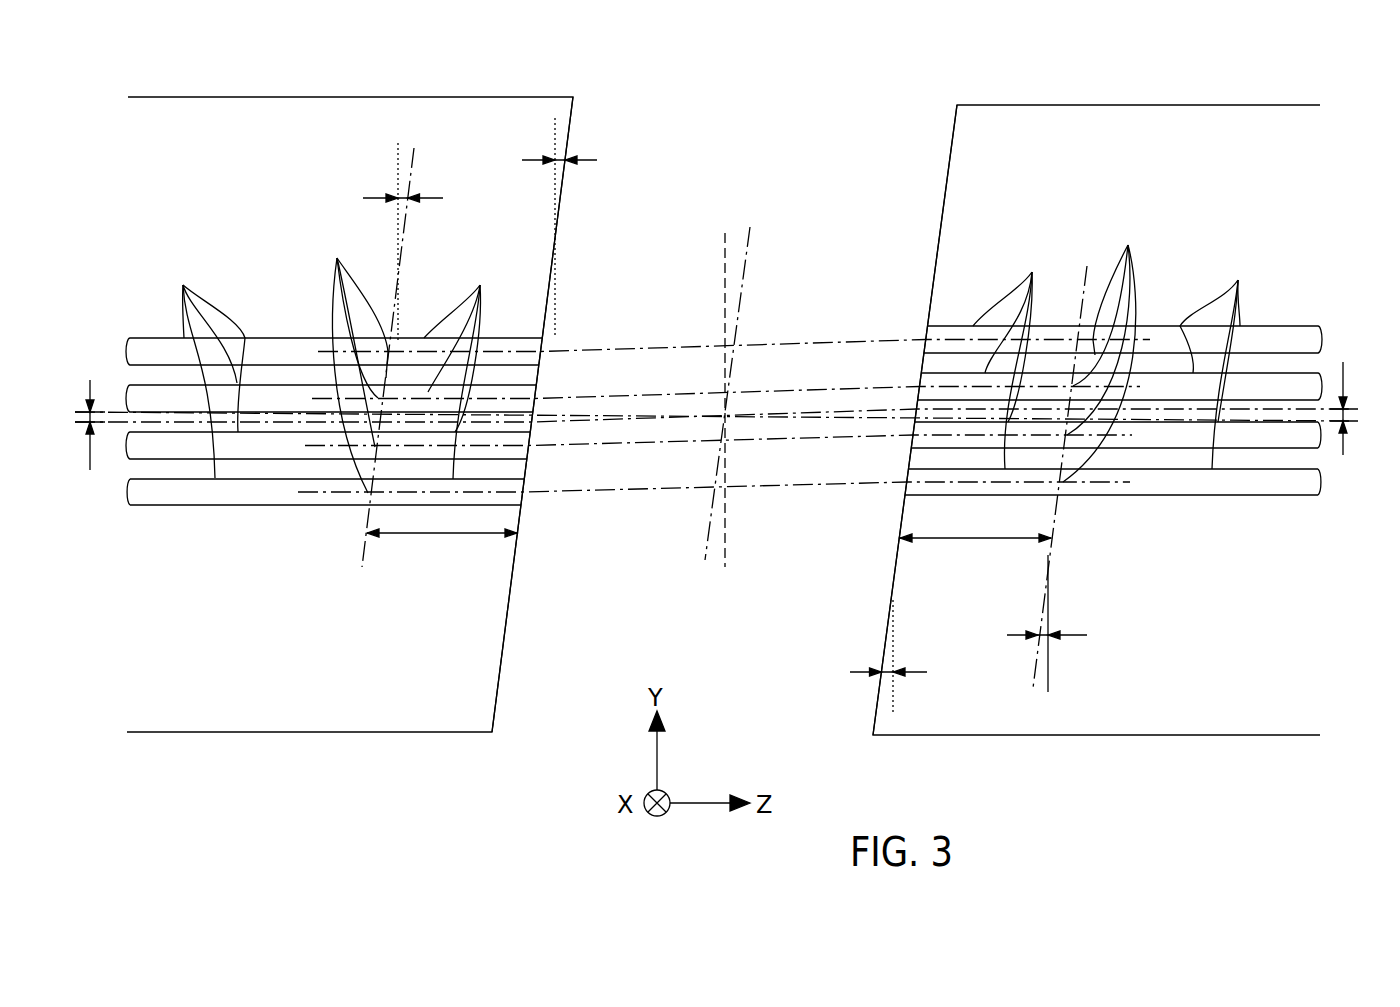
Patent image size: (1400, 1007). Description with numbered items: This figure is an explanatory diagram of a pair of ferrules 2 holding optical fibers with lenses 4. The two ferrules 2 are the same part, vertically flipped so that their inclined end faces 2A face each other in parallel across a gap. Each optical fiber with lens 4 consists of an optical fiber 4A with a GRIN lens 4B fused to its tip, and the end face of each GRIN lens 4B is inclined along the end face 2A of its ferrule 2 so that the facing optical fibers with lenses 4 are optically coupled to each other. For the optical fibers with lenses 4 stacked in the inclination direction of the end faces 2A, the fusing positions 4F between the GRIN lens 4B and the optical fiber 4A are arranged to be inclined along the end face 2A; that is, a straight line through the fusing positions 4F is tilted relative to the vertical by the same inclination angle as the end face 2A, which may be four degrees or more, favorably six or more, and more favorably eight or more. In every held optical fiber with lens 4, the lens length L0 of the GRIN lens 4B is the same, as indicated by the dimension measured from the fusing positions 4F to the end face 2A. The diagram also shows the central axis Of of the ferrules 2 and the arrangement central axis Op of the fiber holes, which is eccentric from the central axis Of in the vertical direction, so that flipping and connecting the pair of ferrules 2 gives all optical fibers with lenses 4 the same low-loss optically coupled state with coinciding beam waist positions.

The ferrule 2 is at (387, 97).
The end face 2A is at (500, 673).
The optical fiber with lens 4 is at (229, 530).
The optical fiber 4A is at (711, 365).
The fusing position 4F is at (734, 356).
The GRIN lens 4B is at (736, 363).
The arrangement central axis Op is at (562, 422).
The central axis Of is at (648, 416).
The lens length L0 is at (709, 552).